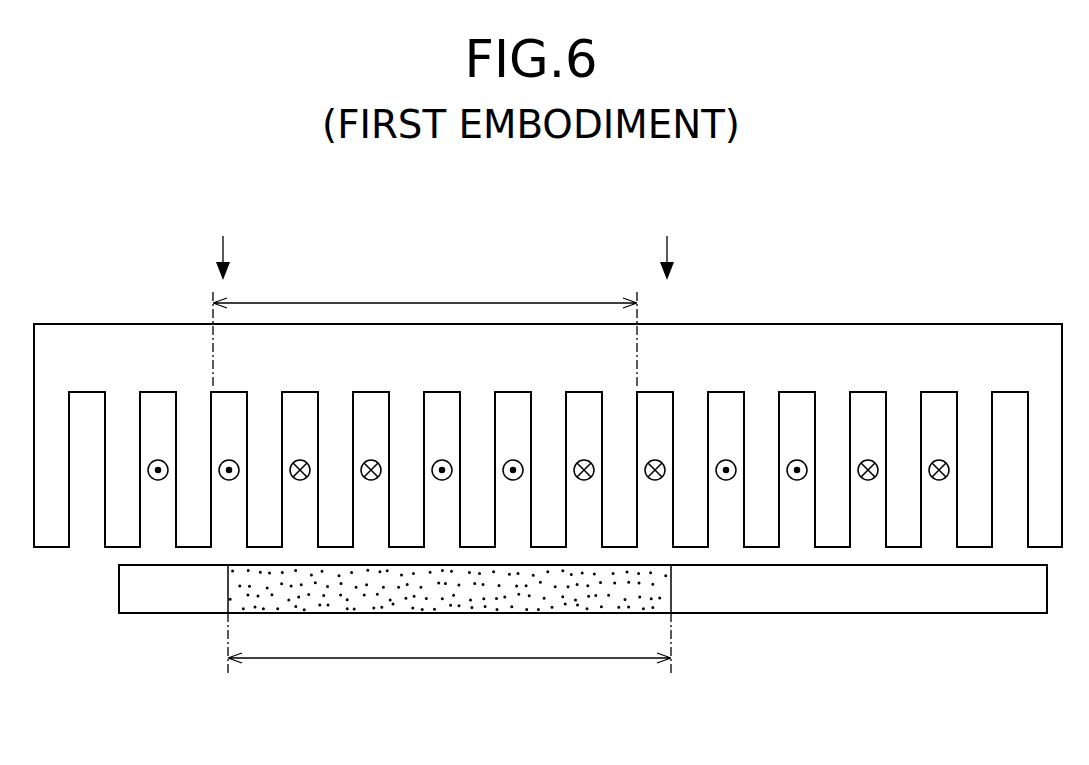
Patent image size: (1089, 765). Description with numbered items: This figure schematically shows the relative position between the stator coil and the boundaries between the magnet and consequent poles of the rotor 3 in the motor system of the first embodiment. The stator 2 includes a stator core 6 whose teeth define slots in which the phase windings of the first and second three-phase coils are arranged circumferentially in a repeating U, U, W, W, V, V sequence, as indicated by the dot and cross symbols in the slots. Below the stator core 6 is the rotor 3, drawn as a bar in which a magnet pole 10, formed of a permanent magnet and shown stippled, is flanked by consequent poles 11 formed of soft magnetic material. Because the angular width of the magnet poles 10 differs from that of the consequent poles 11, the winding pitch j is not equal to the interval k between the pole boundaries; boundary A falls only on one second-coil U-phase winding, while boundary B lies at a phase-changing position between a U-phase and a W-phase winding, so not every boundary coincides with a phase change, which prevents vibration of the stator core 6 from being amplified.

The stator 2 is at (551, 366).
The stator core 6 is at (937, 328).
The rotor 3 is at (583, 629).
The magnet pole 10 is at (659, 589).
The consequent pole 11 is at (160, 593).